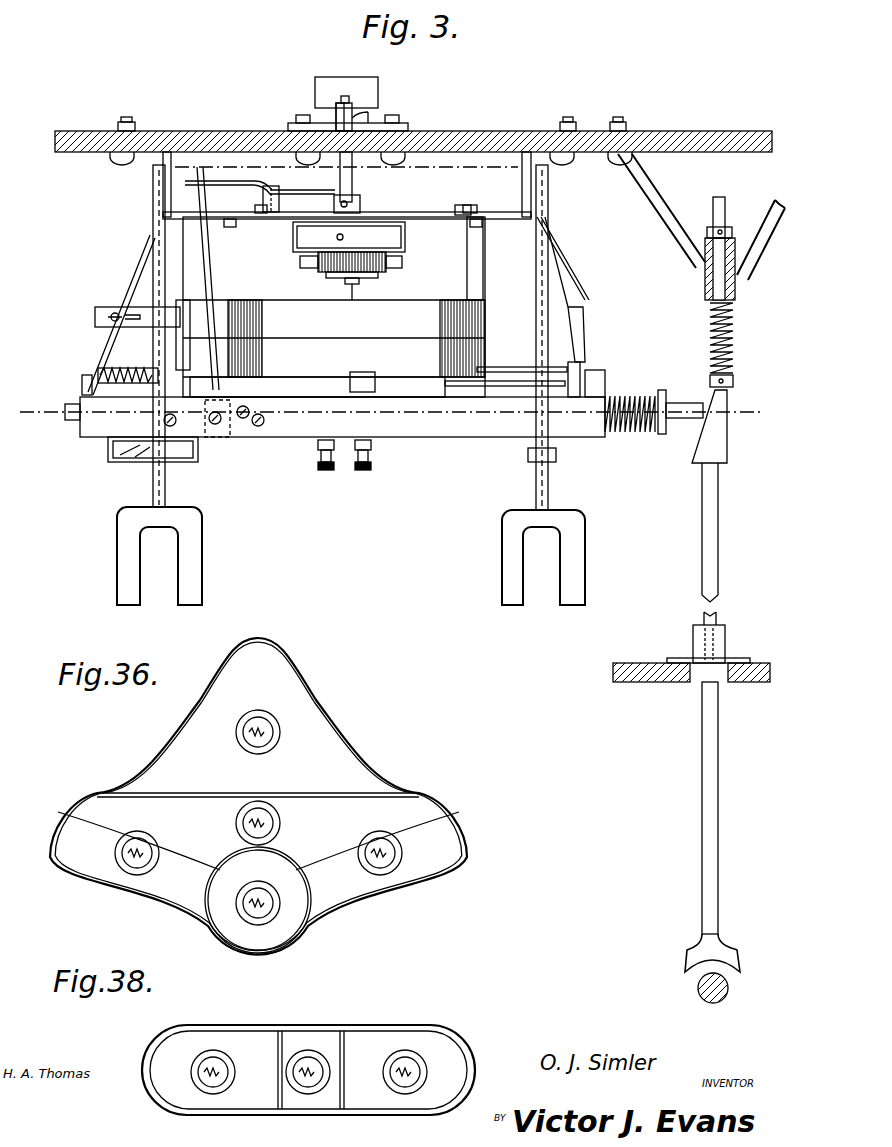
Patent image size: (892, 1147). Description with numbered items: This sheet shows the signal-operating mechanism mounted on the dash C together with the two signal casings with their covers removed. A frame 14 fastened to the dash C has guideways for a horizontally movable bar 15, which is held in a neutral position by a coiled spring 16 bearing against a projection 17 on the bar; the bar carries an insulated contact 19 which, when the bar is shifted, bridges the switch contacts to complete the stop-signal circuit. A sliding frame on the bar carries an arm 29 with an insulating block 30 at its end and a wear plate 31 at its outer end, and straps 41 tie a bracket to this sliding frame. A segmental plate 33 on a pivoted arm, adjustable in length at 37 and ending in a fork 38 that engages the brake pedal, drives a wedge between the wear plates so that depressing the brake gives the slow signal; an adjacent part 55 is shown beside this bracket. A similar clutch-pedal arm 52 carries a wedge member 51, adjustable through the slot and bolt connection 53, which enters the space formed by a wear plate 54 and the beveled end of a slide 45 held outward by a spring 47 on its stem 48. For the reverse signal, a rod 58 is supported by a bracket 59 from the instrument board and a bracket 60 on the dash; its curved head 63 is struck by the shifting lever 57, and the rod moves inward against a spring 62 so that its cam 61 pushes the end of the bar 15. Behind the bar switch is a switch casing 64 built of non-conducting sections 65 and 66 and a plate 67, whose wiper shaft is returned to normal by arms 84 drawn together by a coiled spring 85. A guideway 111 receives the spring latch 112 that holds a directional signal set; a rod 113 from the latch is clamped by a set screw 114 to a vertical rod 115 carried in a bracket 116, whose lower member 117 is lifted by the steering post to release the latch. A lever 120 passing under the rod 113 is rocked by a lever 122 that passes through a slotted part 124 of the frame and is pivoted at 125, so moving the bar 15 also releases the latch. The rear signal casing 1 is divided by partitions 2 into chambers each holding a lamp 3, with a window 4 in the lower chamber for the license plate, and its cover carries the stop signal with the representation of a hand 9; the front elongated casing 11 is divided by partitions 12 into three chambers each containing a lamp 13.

In FIG. 3, the dash C is at (500, 131).
In FIG. 3, the hand 9 is at (386, 417).
In FIG. 3, the frame 14 is at (135, 258).
In FIG. 3, the bar 15 is at (680, 420).
In FIG. 3, the coiled spring 16 is at (622, 395).
In FIG. 3, the projection 17 is at (664, 392).
In FIG. 3, the contact 19 is at (705, 413).
In FIG. 3, the arm 29 is at (523, 393).
In FIG. 3, the block 30 is at (395, 288).
In FIG. 3, the wear plate 31 is at (492, 170).
In FIG. 3, the segmental plate 33 is at (560, 268).
In FIG. 3, the adjustable length connection 37 is at (550, 472).
In FIG. 3, the fork 38 is at (578, 525).
In FIG. 3, the straps 41 is at (317, 387).
In FIG. 3, the slide 45 is at (215, 378).
In FIG. 3, the spring 47 is at (108, 372).
In FIG. 3, the stem 48 is at (82, 380).
In FIG. 3, the wedge member 51 is at (184, 302).
In FIG. 3, the arm 52 is at (150, 488).
In FIG. 3, the slot and bolt connection 53 is at (108, 316).
In FIG. 3, the wear plate 54 is at (225, 395).
In FIG. 3, the bar 55 is at (588, 322).
In FIG. 3, the shifting lever 57 is at (698, 992).
In FIG. 3, the rod 58 is at (705, 548).
In FIG. 3, the bracket 59 is at (648, 663).
In FIG. 3, the bracket 60 is at (678, 242).
In FIG. 3, the cam 61 is at (728, 455).
In FIG. 3, the spring 62 is at (734, 350).
In FIG. 3, the curved head 63 is at (672, 960).
In FIG. 3, the switch casing 64 is at (488, 320).
In FIG. 3, the section 65 is at (346, 318).
In FIG. 3, the section 66 is at (346, 355).
In FIG. 3, the plate 67 is at (486, 290).
In FIG. 3, the arms 84 is at (390, 262).
In FIG. 3, the coiled spring 85 is at (300, 268).
In FIG. 3, the guideway 111 is at (340, 222).
In FIG. 3, the spring latch 112 is at (362, 200).
In FIG. 3, the rod 113 is at (355, 178).
In FIG. 3, the set screw 114 is at (345, 96).
In FIG. 3, the rod 115 is at (338, 103).
In FIG. 3, the bracket 116 is at (355, 115).
In FIG. 3, the member 117 is at (372, 97).
In FIG. 3, the lever 120 is at (268, 195).
In FIG. 3, the lever 122 is at (212, 246).
In FIG. 3, the part of frame 124 is at (498, 217).
In FIG. 3, the pivot 125 is at (362, 470).
In FIG. 36, the casing 1 is at (366, 776).
In FIG. 36, the partitions 2 is at (357, 793).
In FIG. 36, the lamp 3 is at (150, 862).
In FIG. 36, the window 4 is at (290, 951).
In FIG. 38, the elongated casing 11 is at (354, 1028).
In FIG. 38, the partitions 12 is at (345, 1043).
In FIG. 38, the lamp 13 is at (418, 1072).